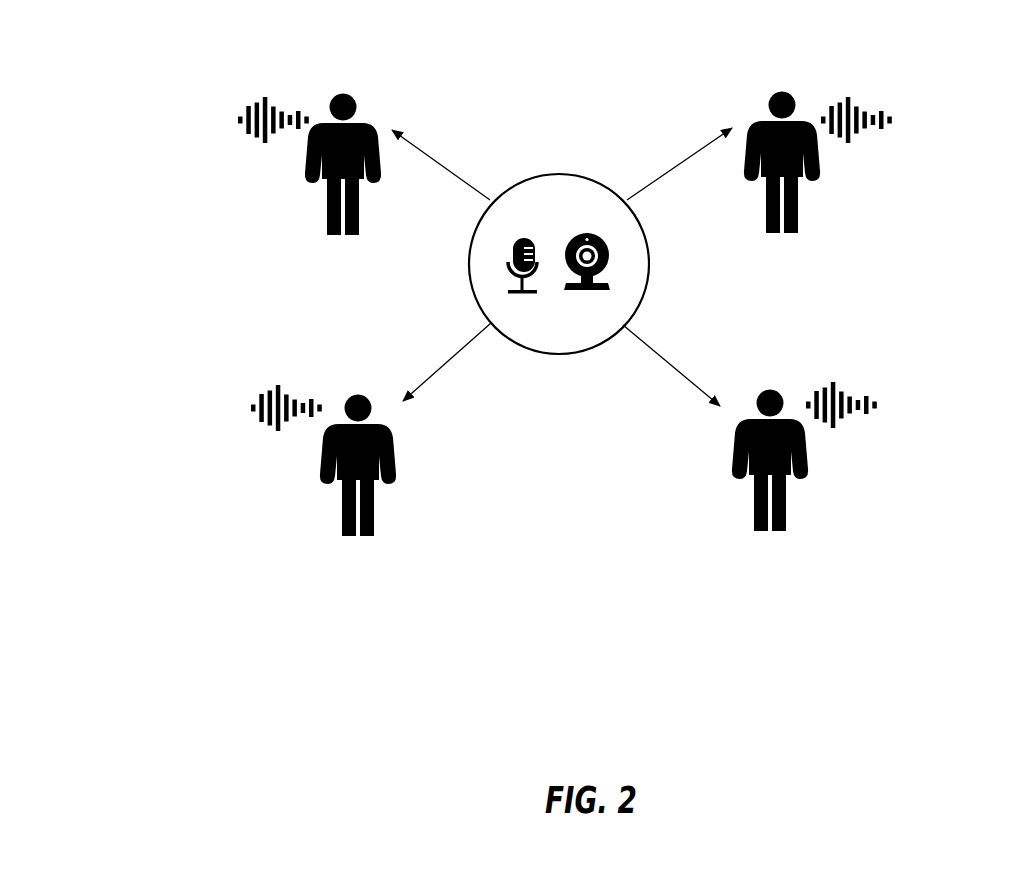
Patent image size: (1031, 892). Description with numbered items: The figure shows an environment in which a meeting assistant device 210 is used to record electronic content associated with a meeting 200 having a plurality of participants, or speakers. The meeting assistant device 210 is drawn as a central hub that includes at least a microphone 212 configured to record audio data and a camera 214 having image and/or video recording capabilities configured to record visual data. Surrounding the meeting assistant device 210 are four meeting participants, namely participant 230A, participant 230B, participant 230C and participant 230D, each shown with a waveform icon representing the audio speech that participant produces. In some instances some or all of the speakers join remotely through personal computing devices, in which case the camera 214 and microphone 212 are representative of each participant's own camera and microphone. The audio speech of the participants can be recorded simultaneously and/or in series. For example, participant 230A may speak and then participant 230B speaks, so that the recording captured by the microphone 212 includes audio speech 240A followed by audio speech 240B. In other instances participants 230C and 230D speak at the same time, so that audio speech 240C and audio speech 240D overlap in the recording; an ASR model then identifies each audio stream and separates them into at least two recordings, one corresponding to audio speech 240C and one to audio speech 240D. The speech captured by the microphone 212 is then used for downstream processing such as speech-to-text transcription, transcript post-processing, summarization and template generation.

The meeting 200 is at (495, 600).
The meeting assistant device 210 is at (552, 178).
The microphone 212 is at (508, 272).
The camera 214 is at (610, 258).
The participant 230A is at (798, 220).
The participant 230B is at (328, 222).
The participant 230C is at (343, 520).
The participant 230D is at (785, 518).
The audio speech 240A is at (892, 120).
The audio speech 240B is at (240, 120).
The audio speech 240C is at (252, 408).
The audio speech 240D is at (875, 405).